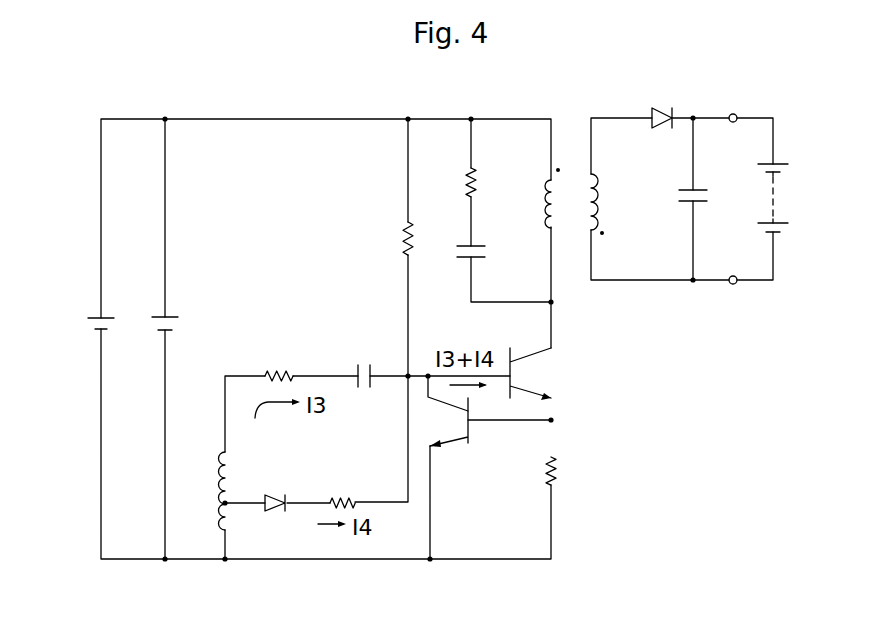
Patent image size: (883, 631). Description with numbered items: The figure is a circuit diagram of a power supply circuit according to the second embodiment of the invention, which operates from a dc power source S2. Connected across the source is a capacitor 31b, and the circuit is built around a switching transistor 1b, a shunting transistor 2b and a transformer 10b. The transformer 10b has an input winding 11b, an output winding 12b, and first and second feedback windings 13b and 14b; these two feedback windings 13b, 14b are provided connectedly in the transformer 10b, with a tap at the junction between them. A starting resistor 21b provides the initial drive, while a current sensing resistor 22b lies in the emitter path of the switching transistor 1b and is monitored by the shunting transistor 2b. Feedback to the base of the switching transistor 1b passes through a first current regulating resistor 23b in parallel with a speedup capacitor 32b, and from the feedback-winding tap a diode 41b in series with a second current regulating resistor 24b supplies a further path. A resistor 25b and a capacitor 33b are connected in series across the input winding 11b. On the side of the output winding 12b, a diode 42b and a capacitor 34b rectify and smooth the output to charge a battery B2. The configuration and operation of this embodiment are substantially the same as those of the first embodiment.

The dc power source S2 is at (88, 323).
The capacitor 31b is at (175, 326).
The starting resistor 21b is at (402, 236).
The resistor 25b is at (463, 184).
The capacitor 33b is at (480, 250).
The input winding 11b is at (545, 208).
The transformer 10b is at (573, 177).
The output winding 12b is at (600, 204).
The diode 42b is at (656, 107).
The capacitor 34b is at (707, 197).
The battery B2 is at (780, 201).
The first current regulating resistor 23b is at (276, 370).
The speedup capacitor 32b is at (362, 365).
The switching transistor 1b is at (542, 377).
The shunting transistor 2b is at (449, 433).
The current sensing resistor 22b is at (556, 470).
The first feedback winding 13b is at (219, 466).
The second feedback winding 14b is at (219, 521).
The diode 41b is at (273, 493).
The second current regulating resistor 24b is at (340, 497).